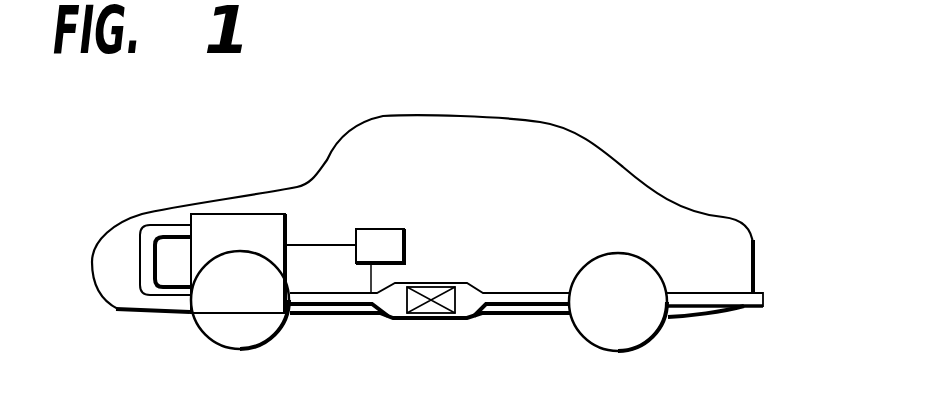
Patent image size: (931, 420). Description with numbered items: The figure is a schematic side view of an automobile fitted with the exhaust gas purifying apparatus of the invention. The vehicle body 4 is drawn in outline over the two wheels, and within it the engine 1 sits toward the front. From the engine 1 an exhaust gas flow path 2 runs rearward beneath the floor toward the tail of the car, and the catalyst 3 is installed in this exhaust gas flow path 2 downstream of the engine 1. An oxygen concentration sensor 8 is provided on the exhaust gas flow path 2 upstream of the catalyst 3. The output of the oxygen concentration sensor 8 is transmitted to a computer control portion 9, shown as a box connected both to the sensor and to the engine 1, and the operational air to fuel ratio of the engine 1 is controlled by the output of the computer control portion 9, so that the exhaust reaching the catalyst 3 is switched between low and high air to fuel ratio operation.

The engine 1 is at (218, 223).
The exhaust gas flow path 2 is at (330, 297).
The catalyst 3 is at (433, 308).
The vehicle body 4 is at (597, 142).
The oxygen concentration sensor 8 is at (372, 296).
The computer control portion 9 is at (380, 233).